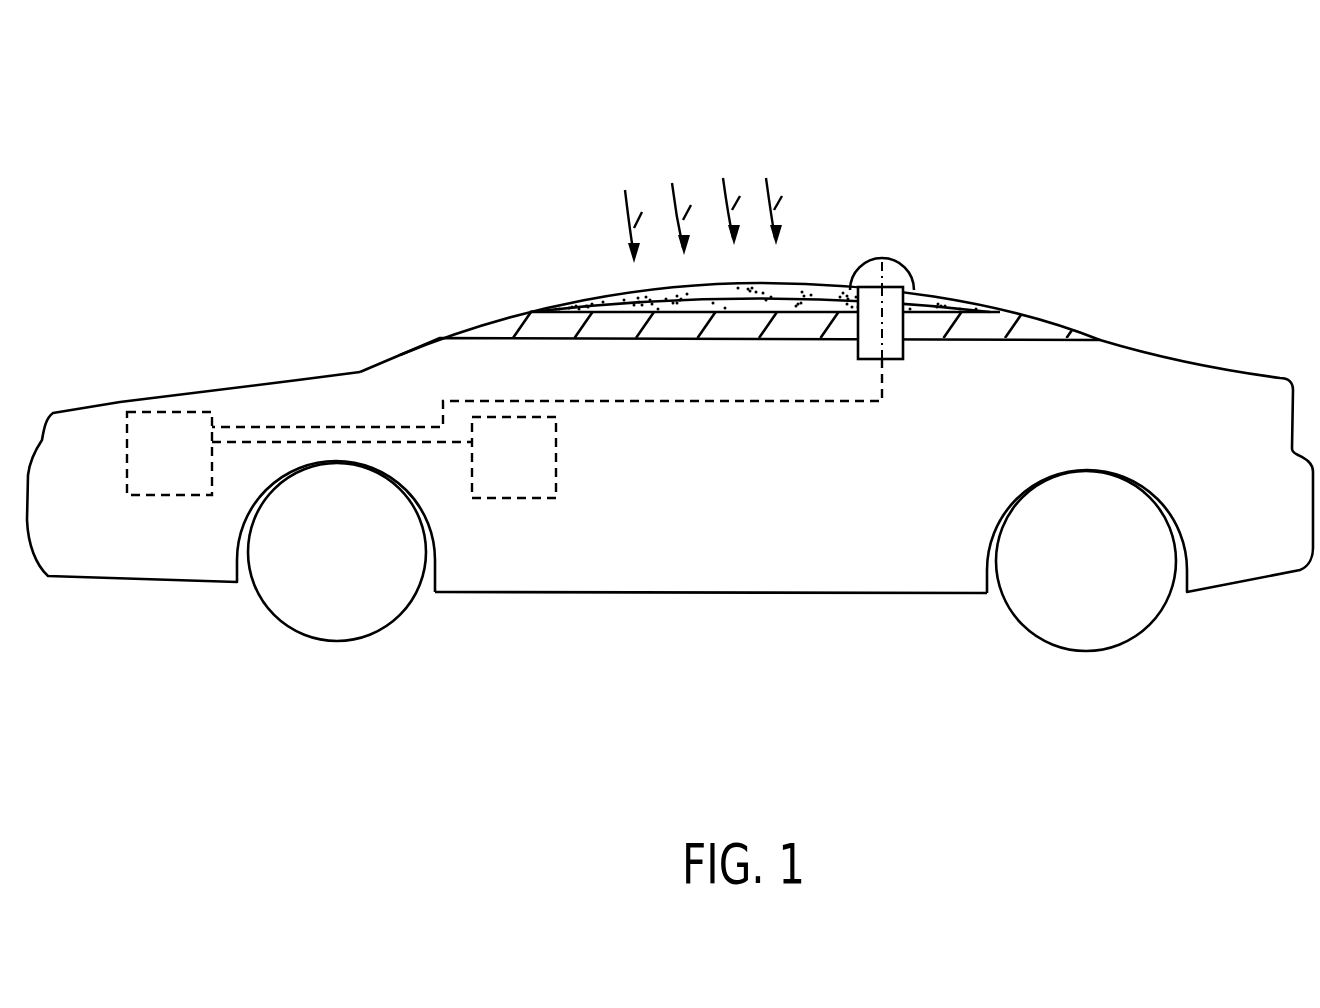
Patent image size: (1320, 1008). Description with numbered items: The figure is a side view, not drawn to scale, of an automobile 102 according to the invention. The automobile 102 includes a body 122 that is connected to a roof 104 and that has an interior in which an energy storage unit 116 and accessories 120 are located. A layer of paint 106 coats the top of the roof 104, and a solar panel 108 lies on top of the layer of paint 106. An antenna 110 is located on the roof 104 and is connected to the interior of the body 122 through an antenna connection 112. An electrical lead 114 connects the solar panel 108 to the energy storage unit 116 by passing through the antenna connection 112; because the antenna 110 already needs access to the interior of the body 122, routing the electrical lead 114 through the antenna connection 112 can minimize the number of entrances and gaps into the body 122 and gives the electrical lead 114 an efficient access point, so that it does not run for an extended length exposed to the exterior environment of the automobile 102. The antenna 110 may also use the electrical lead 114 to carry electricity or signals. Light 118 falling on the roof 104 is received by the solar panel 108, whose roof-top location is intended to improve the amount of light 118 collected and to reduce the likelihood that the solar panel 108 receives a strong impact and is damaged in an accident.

The automobile 102 is at (1054, 123).
The roof 104 is at (1052, 333).
The layer of paint 106 is at (984, 316).
The solar panel 108 is at (936, 302).
The antenna 110 is at (884, 262).
The antenna connection 112 is at (868, 287).
The electrical lead 114 is at (692, 403).
The energy storage unit 116 is at (122, 470).
The light 118 is at (697, 202).
The accessories 120 is at (508, 499).
The body 122 is at (634, 578).